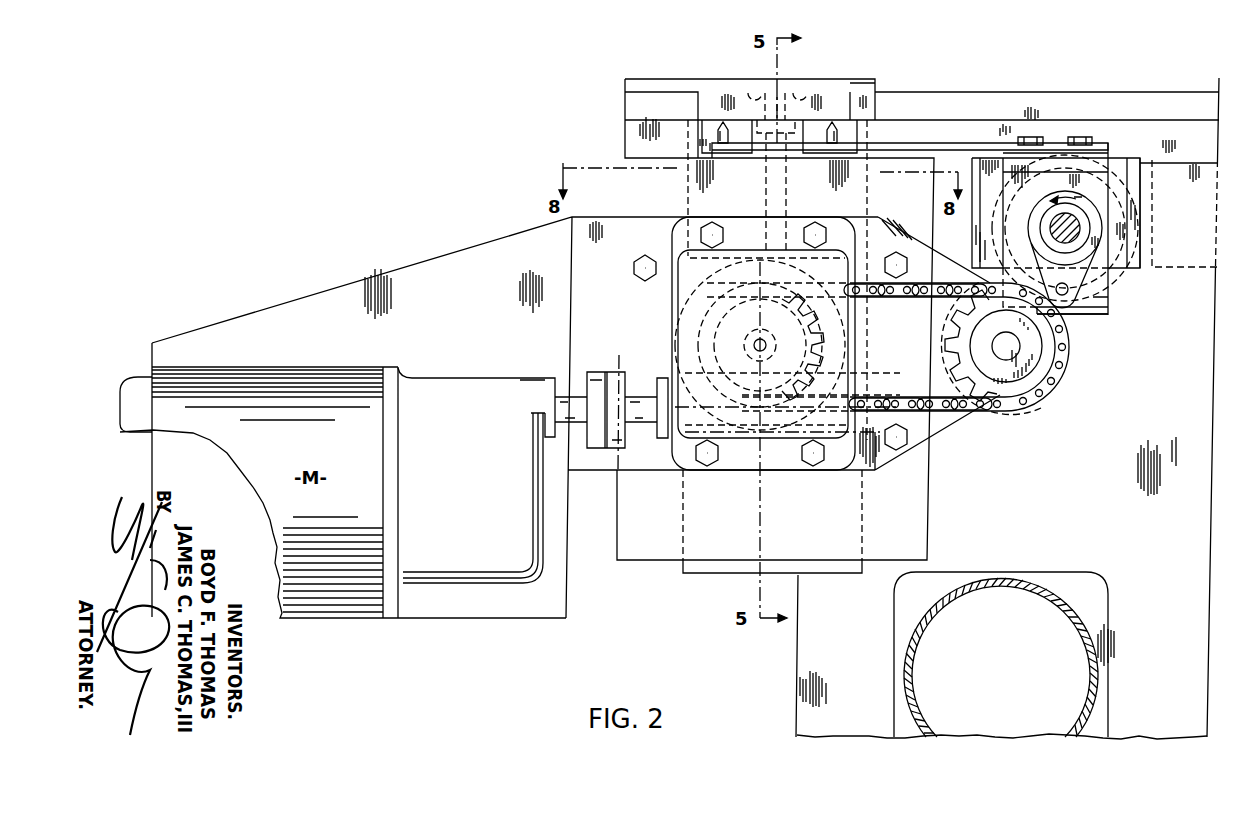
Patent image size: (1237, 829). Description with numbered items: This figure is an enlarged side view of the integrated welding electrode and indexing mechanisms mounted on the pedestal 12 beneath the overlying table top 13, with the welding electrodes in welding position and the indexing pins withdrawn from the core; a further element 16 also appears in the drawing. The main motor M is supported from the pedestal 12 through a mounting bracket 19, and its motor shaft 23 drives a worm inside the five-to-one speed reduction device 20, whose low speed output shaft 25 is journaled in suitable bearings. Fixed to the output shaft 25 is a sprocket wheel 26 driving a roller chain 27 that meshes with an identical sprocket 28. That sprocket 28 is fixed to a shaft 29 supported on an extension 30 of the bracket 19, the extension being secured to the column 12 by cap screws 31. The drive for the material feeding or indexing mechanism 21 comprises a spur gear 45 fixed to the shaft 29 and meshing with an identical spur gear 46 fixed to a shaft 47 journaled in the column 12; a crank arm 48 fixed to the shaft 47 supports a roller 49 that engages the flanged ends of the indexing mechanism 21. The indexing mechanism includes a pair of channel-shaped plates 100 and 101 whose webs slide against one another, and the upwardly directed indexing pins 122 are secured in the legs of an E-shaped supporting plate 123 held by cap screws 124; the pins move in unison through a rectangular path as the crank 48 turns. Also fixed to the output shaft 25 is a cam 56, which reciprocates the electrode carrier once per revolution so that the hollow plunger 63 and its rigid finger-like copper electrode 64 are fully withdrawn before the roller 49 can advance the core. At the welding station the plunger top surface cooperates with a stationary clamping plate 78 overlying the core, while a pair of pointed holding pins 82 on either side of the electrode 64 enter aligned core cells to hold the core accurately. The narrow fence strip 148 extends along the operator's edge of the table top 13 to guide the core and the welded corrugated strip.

The pedestal 12 is at (818, 673).
The table top 13 is at (986, 122).
The pipe 16 is at (1017, 580).
The mounting bracket 19 is at (440, 280).
The speed reduction device 20 is at (729, 438).
The indexing mechanism 21 is at (1112, 306).
The motor shaft 23 is at (559, 393).
The output shaft 25 is at (786, 325).
The sprocket wheel 26 is at (830, 333).
The roller chain 27 is at (962, 413).
The sprocket 28 is at (945, 341).
The shaft 29 is at (997, 353).
The extension of bracket 30 is at (942, 441).
The cap screws 31 is at (640, 257).
The spur gear 45 is at (1070, 372).
The spur gear 46 is at (1094, 229).
The shaft 47 is at (1076, 223).
The crank arm 48 is at (1078, 281).
The roller 49 is at (1093, 298).
The cam 56 is at (848, 366).
The hollow plunger 63 is at (768, 196).
The finger-like copper electrode 64 is at (778, 94).
The stationary clamping plate 78 is at (880, 86).
The holding pins 82 is at (764, 96).
The channel-shaped plate 100 is at (1141, 222).
The channel-shaped plate 101 is at (1091, 327).
The indexing pins 122 is at (721, 125).
The E-shaped supporting plate 123 is at (996, 143).
The cap screws 124 is at (1078, 136).
The fence strip 148 is at (637, 110).